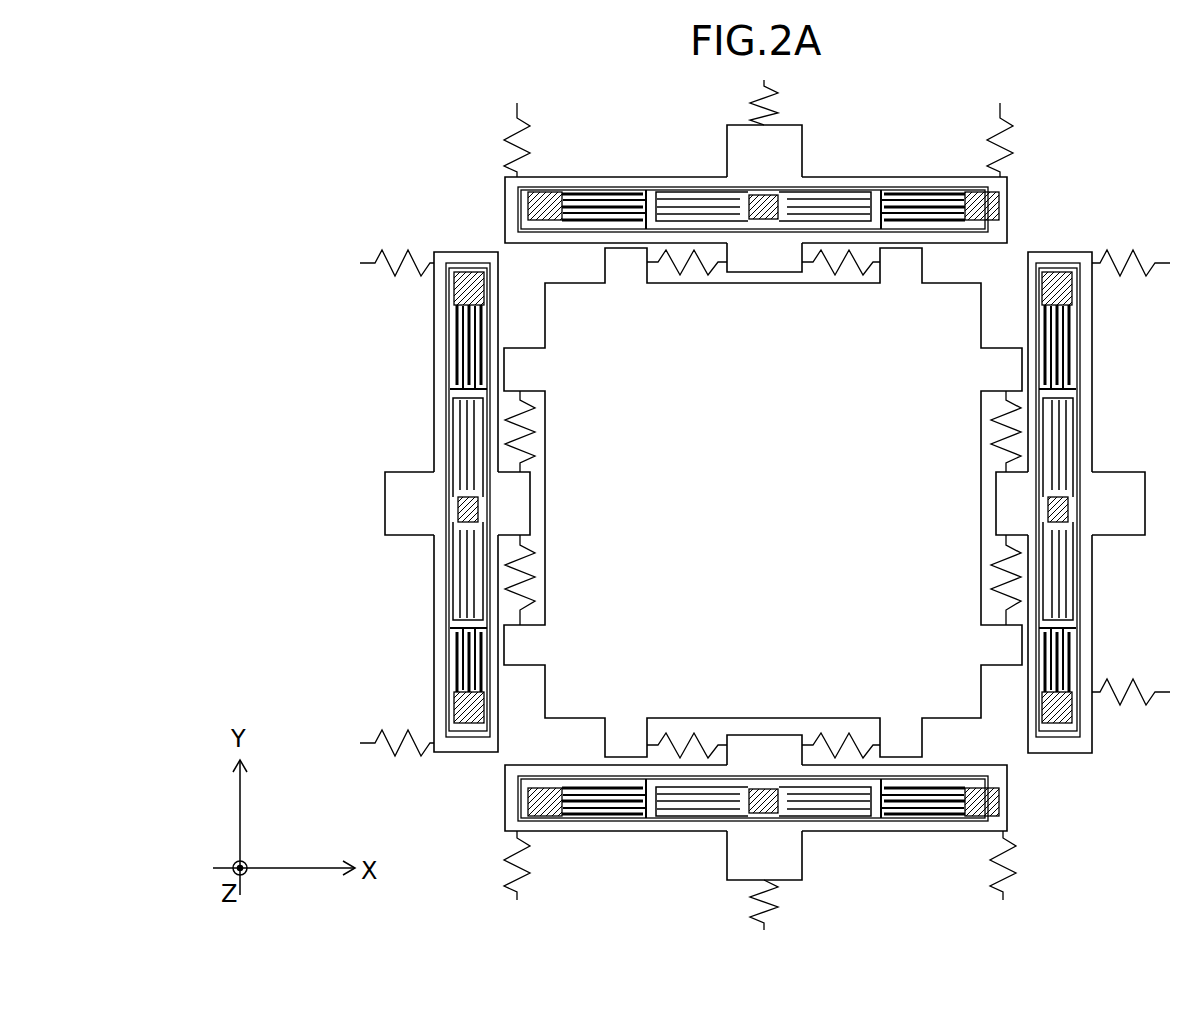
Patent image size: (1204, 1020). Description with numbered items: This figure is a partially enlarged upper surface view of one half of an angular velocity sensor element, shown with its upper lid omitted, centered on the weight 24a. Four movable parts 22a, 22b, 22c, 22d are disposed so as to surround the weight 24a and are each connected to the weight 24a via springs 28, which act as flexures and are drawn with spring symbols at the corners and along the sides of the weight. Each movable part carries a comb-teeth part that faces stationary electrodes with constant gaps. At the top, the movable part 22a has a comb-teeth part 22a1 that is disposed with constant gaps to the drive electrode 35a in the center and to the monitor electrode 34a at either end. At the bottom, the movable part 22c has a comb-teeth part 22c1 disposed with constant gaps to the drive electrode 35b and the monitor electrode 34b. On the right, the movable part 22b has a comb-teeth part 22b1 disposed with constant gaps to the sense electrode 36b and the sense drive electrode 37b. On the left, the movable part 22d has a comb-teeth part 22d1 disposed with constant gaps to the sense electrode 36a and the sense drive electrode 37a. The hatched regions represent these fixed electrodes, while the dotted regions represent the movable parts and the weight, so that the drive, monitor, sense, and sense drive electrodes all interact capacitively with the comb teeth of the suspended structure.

The movable part 22a is at (765, 143).
The comb-teeth part 22a1 is at (645, 192).
The movable part 22b is at (1105, 478).
The comb-teeth part 22b1 is at (1065, 400).
The movable part 22c is at (660, 830).
The comb-teeth part 22c1 is at (870, 800).
The movable part 22d is at (415, 510).
The comb-teeth part 22d1 is at (470, 610).
The weight 24a is at (620, 677).
The springs 28 is at (395, 288).
The monitor electrode 34a is at (535, 205).
The monitor electrode 34b is at (530, 797).
The drive electrode 35a is at (780, 197).
The drive electrode 35b is at (770, 805).
The sense electrode 36a is at (470, 285).
The sense electrode 36b is at (1062, 285).
The sense drive electrode 37a is at (465, 510).
The sense drive electrode 37b is at (1072, 518).